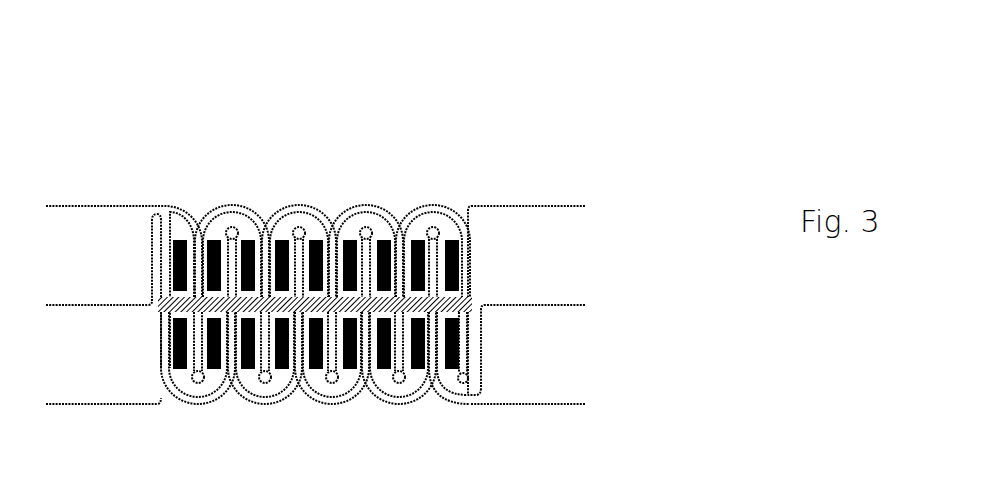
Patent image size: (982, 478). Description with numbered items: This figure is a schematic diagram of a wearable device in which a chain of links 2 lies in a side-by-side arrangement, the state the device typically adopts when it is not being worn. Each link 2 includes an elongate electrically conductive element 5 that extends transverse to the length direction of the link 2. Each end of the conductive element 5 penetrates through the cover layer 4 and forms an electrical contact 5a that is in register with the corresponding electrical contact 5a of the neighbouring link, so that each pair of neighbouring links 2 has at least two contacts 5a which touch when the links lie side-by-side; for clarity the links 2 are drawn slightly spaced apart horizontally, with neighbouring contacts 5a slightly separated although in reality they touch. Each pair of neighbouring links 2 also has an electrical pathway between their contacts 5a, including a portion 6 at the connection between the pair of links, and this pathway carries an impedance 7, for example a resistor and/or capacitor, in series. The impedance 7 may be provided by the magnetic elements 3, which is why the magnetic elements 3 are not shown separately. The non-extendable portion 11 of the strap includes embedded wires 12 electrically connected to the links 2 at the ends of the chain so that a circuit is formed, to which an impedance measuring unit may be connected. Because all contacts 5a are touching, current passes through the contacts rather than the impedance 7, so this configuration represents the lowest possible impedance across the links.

The link 2 is at (240, 135).
The magnetic element 3 is at (457, 248).
The impedance 7 is at (316, 304).
The cover layer 4 is at (420, 208).
The elongate electrically conductive element 5 is at (212, 300).
The electrical contact 5a is at (303, 305).
The portion of the electrical pathway 6 is at (335, 395).
The non-extendable portion of the strap 11 is at (137, 403).
The embedded wire 12 is at (98, 305).